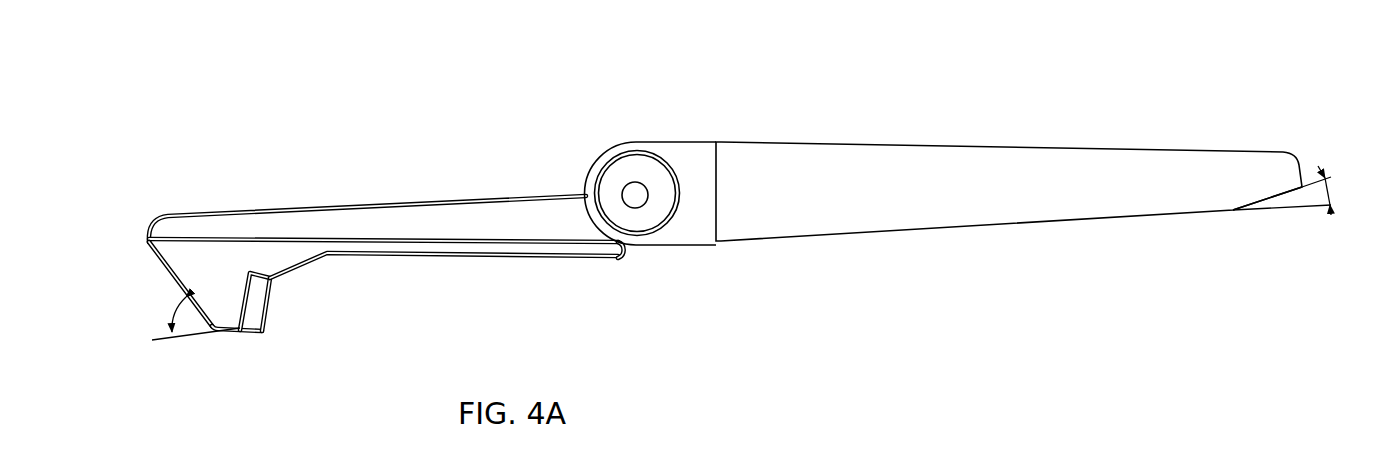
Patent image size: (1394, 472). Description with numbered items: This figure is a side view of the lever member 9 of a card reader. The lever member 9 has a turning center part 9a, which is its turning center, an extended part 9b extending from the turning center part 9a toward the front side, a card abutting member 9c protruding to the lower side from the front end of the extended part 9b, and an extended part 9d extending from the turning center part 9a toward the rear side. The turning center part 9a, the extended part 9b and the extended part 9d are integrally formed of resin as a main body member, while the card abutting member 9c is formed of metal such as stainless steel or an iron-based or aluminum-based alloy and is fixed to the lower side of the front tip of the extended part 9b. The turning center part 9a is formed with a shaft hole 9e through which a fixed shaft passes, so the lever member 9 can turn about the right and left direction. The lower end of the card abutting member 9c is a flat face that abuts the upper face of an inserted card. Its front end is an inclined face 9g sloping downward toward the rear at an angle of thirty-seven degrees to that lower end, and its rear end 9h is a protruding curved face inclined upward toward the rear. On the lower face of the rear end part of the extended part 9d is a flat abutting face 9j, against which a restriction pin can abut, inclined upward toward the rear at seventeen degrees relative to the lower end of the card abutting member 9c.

The lever member 9 is at (1241, 80).
The turning center part 9a is at (680, 142).
The extended part 9b is at (362, 206).
The card abutting member 9c is at (233, 335).
The extended part 9d is at (1035, 147).
The shaft hole 9e is at (645, 188).
The inclined face 9g is at (161, 264).
The rear end 9h is at (266, 307).
The abutting face 9j is at (1262, 208).